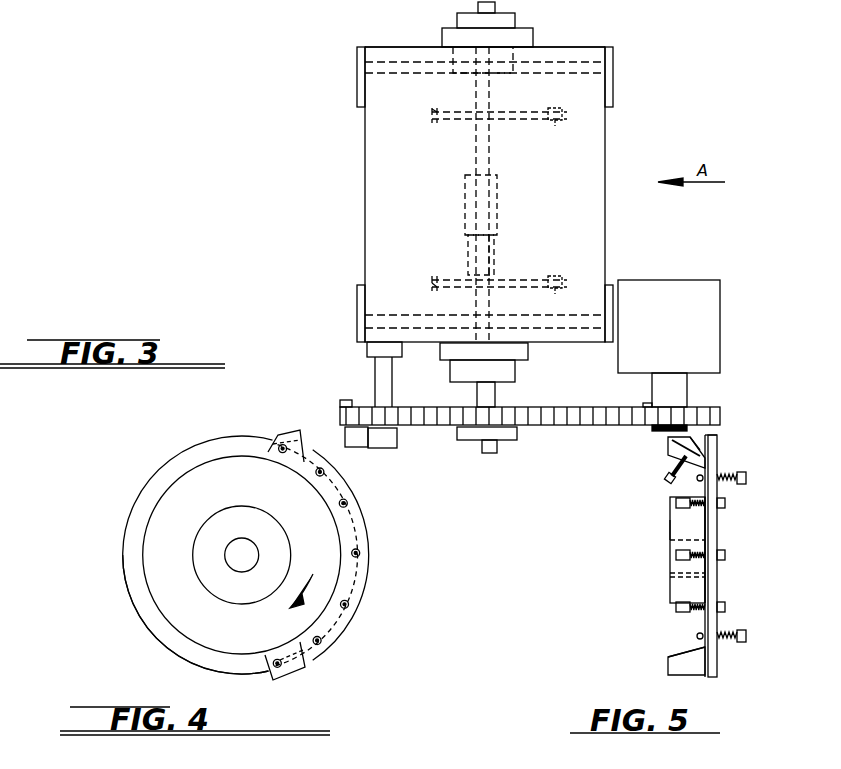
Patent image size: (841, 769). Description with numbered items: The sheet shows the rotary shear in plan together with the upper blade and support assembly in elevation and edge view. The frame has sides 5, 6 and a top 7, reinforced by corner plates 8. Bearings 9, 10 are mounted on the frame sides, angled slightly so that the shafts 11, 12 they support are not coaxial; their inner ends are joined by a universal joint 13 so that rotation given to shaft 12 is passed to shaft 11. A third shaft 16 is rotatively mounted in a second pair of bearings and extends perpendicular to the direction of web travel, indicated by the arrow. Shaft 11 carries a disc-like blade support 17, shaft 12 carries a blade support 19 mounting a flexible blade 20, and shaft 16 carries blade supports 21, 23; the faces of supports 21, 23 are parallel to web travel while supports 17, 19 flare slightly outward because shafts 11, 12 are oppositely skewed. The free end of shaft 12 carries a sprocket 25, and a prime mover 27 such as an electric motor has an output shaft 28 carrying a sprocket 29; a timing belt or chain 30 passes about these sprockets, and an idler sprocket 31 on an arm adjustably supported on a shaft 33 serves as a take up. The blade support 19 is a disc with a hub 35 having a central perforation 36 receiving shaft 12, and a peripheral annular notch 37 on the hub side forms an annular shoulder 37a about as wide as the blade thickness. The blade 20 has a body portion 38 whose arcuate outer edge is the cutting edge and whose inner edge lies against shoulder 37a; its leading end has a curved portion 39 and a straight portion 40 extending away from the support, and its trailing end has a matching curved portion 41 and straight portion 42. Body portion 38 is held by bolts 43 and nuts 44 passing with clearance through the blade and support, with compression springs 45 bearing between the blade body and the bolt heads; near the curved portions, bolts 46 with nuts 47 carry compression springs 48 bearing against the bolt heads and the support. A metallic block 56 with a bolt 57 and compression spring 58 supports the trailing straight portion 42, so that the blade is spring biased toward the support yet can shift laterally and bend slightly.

In FIG. 3, the frame side 5 is at (565, 47).
In FIG. 3, the frame side 6 is at (555, 345).
In FIG. 3, the top 7 is at (600, 152).
In FIG. 3, the corner plates 8 is at (357, 50).
In FIG. 3, the bearing 9 is at (472, 19).
In FIG. 3, the bearing 10 is at (444, 365).
In FIG. 3, the shaft 11 is at (495, 8).
In FIG. 3, the shaft 12 is at (468, 235).
In FIG. 3, the universal joint 13 is at (462, 194).
In FIG. 3, the third shaft 16 is at (496, 240).
In FIG. 3, the blade support 17 is at (432, 112).
In FIG. 3, the blade support 19 is at (432, 287).
In FIG. 4, the blade support 19 is at (188, 447).
In FIG. 5, the blade support 19 is at (717, 453).
In FIG. 4, the flexible blade 20 is at (370, 545).
In FIG. 5, the flexible blade 20 is at (717, 524).
In FIG. 3, the blade support 21 is at (435, 119).
In FIG. 3, the second blade support 23 is at (432, 280).
In FIG. 3, the sprocket 25 is at (465, 440).
In FIG. 3, the prime mover 27 is at (720, 283).
In FIG. 3, the output shaft 28 is at (687, 393).
In FIG. 3, the sprocket 29 is at (652, 407).
In FIG. 3, the timing belt or chain 30 is at (421, 427).
In FIG. 3, the idler sprocket 31 is at (352, 407).
In FIG. 3, the shaft 33 is at (394, 370).
In FIG. 4, the hub 35 is at (195, 589).
In FIG. 5, the hub 35 is at (682, 530).
In FIG. 4, the central perforation 36 is at (238, 556).
In FIG. 5, the central perforation 36 is at (672, 574).
In FIG. 4, the peripheral annular notch 37 is at (165, 470).
In FIG. 4, the annular shoulder 37a is at (235, 457).
In FIG. 4, the body portion 38 is at (345, 578).
In FIG. 5, the body portion 38 is at (720, 572).
In FIG. 4, the curved portion 39 is at (305, 655).
In FIG. 4, the straight portion 40 is at (285, 676).
In FIG. 5, the straight portion 40 is at (672, 666).
In FIG. 4, the curved portion 41 is at (317, 458).
In FIG. 5, the curved portion 41 is at (717, 458).
In FIG. 4, the straight portion 42 is at (296, 442).
In FIG. 5, the straight portion 42 is at (680, 450).
In FIG. 5, the bolts 43 is at (676, 504).
In FIG. 5, the nuts 44 is at (725, 503).
In FIG. 5, the compression springs 45 is at (690, 512).
In FIG. 5, the bolts 46 is at (746, 478).
In FIG. 5, the nuts 47 is at (717, 437).
In FIG. 5, the compression springs 48 is at (733, 478).
In FIG. 5, the metallic block 56 is at (672, 441).
In FIG. 5, the bolt 57 is at (668, 480).
In FIG. 5, the compression spring 58 is at (676, 466).